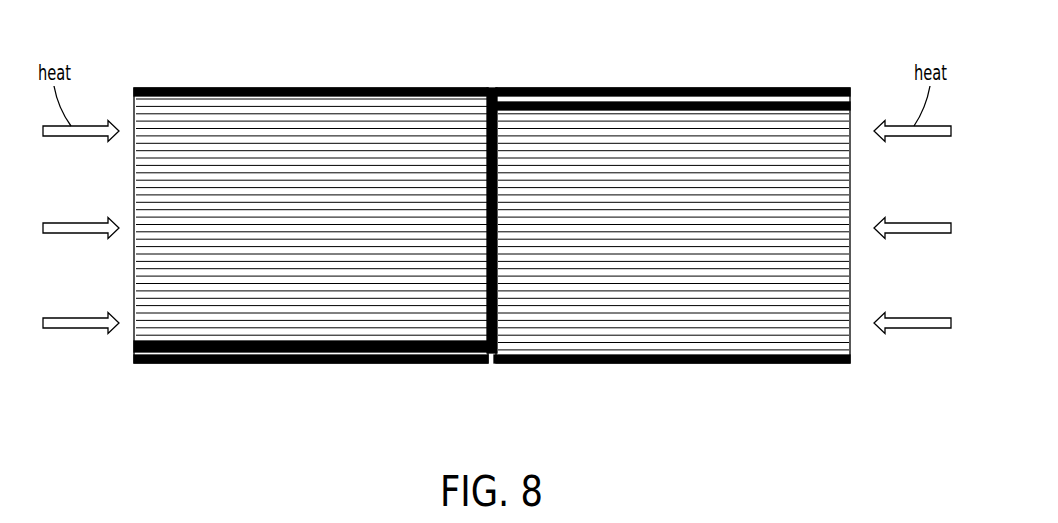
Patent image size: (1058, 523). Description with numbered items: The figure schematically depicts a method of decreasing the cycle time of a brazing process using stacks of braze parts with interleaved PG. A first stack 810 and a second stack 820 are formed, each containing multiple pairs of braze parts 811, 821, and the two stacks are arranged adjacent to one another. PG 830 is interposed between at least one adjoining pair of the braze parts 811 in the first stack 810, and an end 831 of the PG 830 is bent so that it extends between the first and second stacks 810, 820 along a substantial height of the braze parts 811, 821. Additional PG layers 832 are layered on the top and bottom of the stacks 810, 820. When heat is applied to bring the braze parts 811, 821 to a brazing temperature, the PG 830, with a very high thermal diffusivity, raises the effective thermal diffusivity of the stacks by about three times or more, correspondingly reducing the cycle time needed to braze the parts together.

The first stack 810 is at (313, 80).
The braze parts of the first stack 811 is at (143, 265).
The second stack 820 is at (548, 80).
The braze parts of the second stack 821 is at (805, 272).
The PG 830 is at (222, 338).
The end of the PG 831 is at (490, 314).
The additional PG layers 832 is at (188, 80).